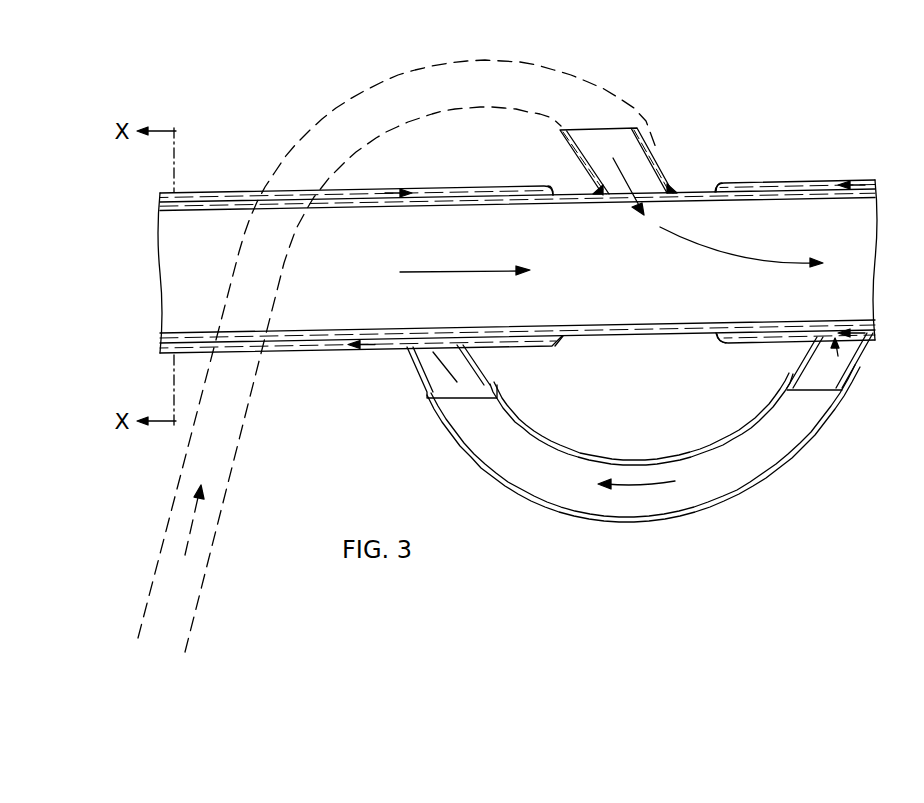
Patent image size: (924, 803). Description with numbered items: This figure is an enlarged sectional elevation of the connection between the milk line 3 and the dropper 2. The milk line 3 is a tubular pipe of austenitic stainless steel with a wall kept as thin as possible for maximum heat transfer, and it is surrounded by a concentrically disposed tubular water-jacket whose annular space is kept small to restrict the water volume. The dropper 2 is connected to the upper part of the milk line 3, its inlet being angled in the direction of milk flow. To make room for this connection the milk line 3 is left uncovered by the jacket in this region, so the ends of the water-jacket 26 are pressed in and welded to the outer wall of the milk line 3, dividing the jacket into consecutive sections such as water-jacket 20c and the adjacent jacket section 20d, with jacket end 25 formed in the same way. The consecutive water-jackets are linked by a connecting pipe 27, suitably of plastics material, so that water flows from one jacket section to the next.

The dropper 2 is at (343, 116).
The milk line 3 is at (452, 203).
The water-jacket 20c is at (828, 180).
The left jacket section 20d is at (290, 356).
The jacket sleeve end 25 is at (724, 346).
The ends of the water-jacket 26 is at (555, 190).
The connecting pipe 27 is at (800, 436).